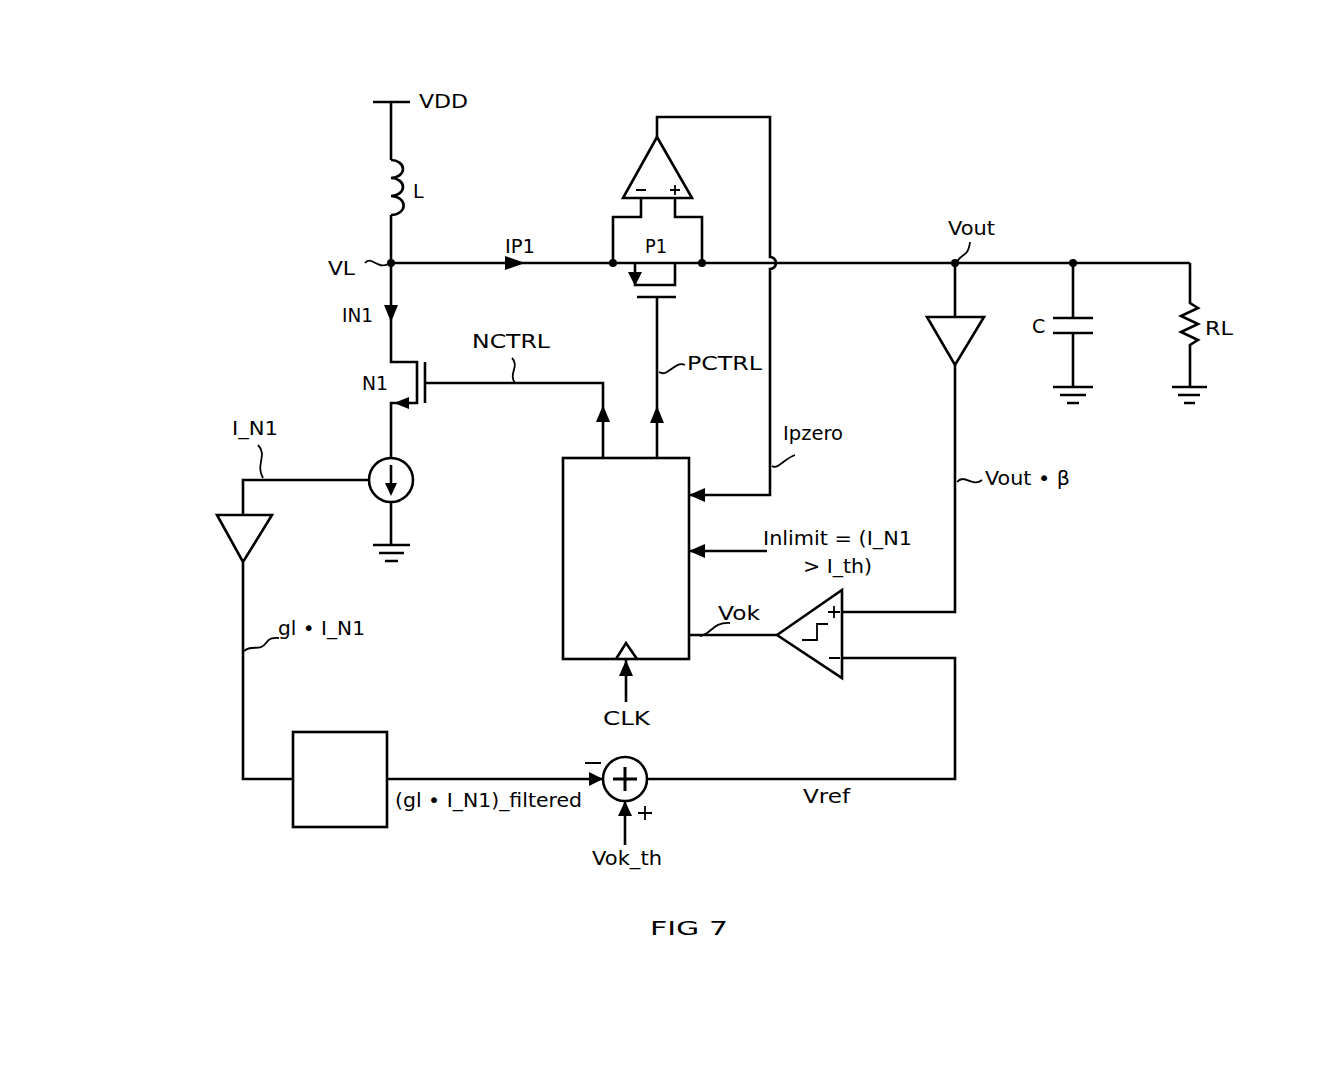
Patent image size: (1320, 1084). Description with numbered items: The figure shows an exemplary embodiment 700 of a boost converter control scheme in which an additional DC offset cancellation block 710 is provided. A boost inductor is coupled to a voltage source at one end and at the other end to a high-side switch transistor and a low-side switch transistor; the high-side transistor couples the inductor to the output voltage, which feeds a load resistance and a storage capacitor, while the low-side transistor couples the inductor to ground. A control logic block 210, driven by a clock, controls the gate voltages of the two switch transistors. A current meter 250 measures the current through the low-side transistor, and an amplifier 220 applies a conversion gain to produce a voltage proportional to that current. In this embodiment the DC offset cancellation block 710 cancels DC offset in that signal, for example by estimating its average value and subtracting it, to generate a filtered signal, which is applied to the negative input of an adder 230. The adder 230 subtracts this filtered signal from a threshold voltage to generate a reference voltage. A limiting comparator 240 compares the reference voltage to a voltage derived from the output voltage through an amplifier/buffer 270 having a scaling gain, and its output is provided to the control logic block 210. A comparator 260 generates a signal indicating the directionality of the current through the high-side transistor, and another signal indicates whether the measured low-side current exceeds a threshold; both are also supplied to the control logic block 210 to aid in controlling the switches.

The exemplary embodiment of a boost converter control scheme 700 is at (1213, 152).
The comparator 260 is at (645, 162).
The amplifier/buffer 270 is at (975, 317).
The current meter 250 is at (373, 466).
The amplifier 220 is at (226, 533).
The control logic block 210 is at (672, 458).
The limiting comparator 240 is at (802, 664).
The adder 230 is at (643, 762).
The DC offset cancellation block 710 is at (337, 731).